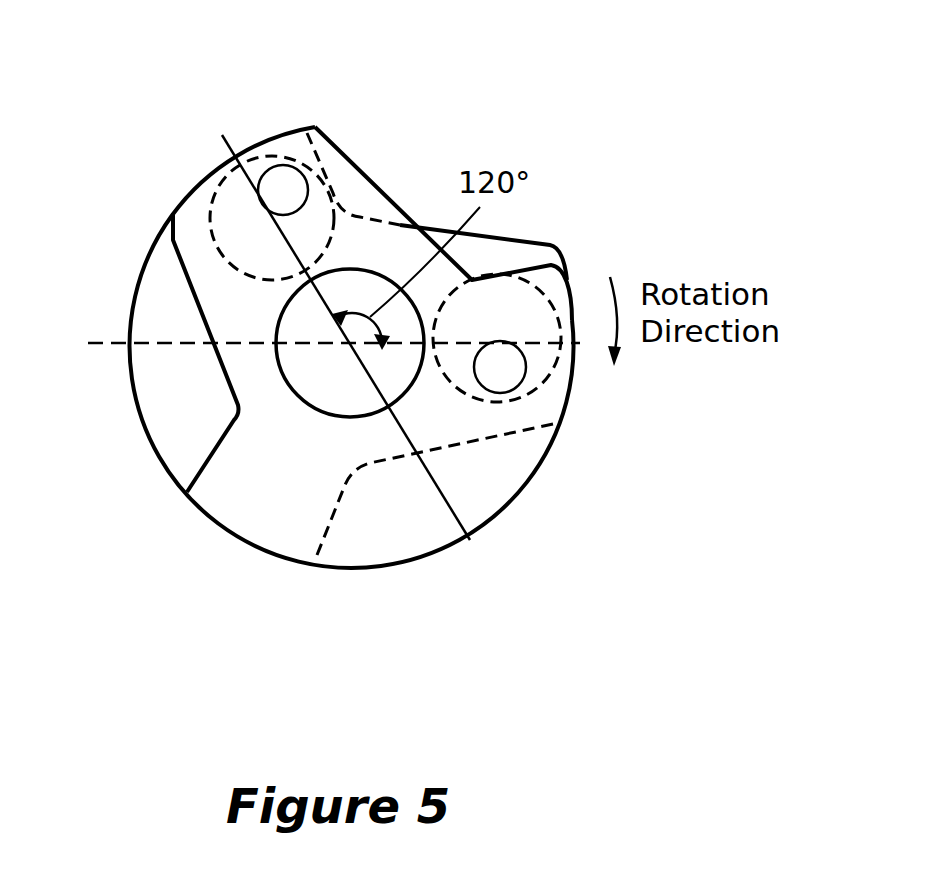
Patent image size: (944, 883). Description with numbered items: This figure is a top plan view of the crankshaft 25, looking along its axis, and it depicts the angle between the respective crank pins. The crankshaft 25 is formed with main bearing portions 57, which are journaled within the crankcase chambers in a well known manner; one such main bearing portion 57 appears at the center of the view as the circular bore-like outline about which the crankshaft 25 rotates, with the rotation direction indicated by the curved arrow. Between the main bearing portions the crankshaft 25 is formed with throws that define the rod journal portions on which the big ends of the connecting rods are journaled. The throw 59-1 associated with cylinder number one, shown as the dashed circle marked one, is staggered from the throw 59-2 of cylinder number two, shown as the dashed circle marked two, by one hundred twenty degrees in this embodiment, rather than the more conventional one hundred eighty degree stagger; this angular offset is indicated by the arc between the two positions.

The crankshaft 25 is at (150, 431).
The main bearing portion 57 is at (376, 270).
The throw associated with no. 1 cylinder 59-1 is at (545, 385).
The throw of cylinder no. 2 59-2 is at (210, 208).